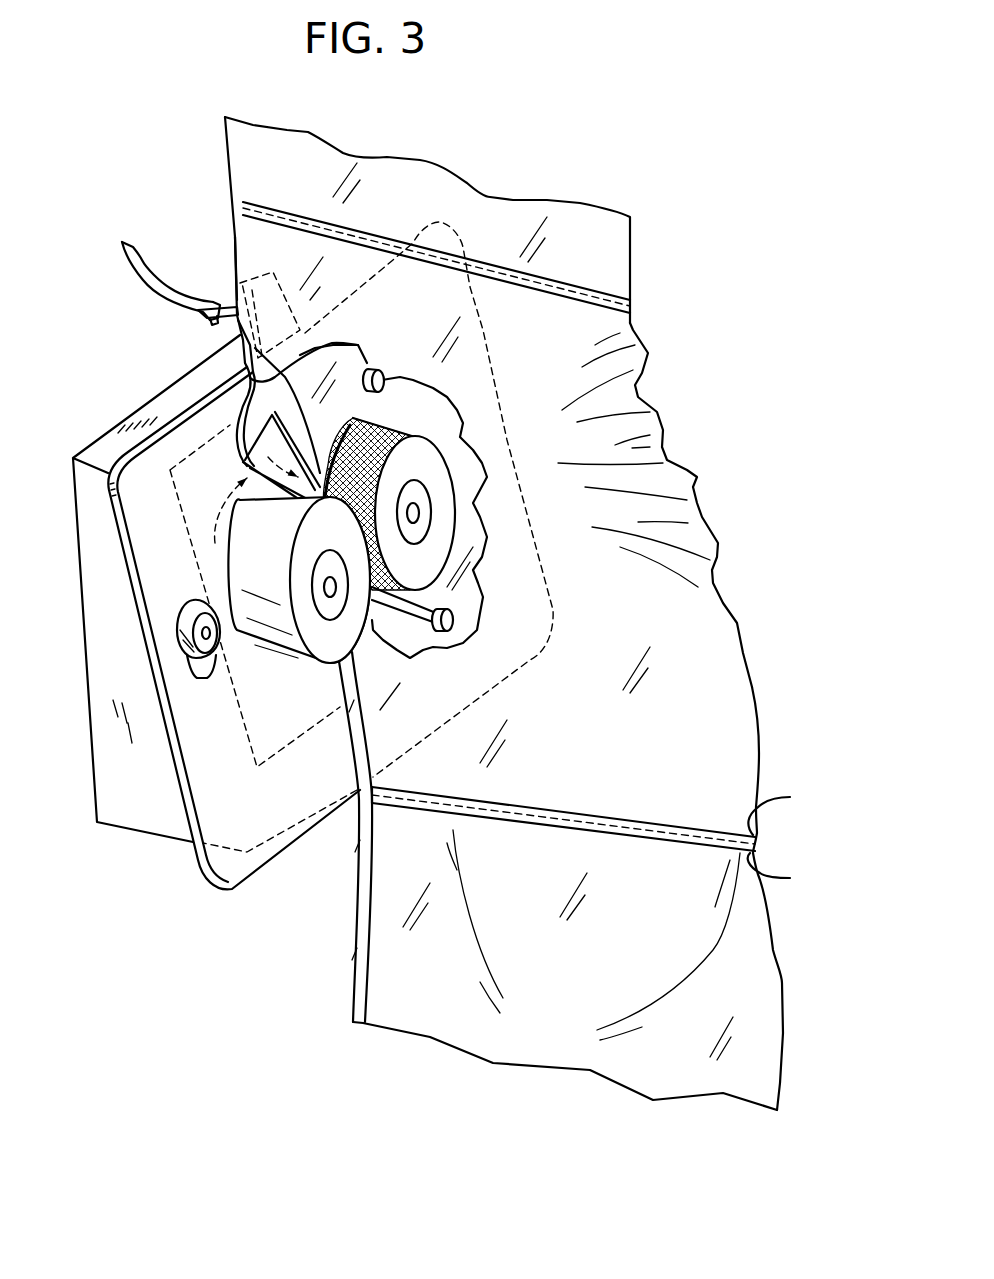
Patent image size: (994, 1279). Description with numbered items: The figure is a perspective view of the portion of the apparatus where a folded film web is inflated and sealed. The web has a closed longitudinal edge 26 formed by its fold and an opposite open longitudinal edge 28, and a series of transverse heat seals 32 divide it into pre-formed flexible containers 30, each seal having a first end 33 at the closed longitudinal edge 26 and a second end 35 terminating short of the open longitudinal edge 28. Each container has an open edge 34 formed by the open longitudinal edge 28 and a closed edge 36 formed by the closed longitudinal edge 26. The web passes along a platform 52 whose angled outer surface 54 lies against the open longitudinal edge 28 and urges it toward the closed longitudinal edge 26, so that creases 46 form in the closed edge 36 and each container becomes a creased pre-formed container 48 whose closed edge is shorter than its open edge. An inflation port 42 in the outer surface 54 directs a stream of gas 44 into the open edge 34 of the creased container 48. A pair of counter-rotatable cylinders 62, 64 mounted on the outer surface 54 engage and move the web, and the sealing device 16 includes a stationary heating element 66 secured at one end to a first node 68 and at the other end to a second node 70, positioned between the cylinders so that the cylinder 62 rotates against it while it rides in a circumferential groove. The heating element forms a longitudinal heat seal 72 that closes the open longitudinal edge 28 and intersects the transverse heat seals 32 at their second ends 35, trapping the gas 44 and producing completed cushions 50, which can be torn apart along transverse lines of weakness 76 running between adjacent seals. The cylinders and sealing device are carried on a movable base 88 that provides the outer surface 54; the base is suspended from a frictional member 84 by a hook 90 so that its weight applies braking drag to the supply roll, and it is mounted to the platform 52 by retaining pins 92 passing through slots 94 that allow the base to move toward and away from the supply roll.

The sealing device 16 is at (373, 365).
The closed longitudinal edge 26 is at (757, 690).
The open longitudinal edge 28 is at (235, 237).
The pre-formed flexible container 30 is at (374, 196).
The transverse heat seal 32 is at (540, 280).
The first end 33 is at (785, 838).
The open edge 34 is at (247, 392).
The second end 35 is at (373, 787).
The closed edge 36 is at (632, 260).
The inflation port 42 is at (268, 440).
The stream of gas 44 is at (215, 527).
The crease 46 is at (693, 480).
The creased pre-formed container 48 is at (614, 755).
The completed cushion 50 is at (535, 985).
The platform 52 is at (148, 808).
The outer surface 54 is at (274, 793).
The cylinder 62 is at (407, 475).
The cylinder 64 is at (317, 553).
The heating element 66 is at (358, 400).
The first node 68 is at (382, 378).
The second node 70 is at (452, 623).
The longitudinal heat seal 72 is at (373, 680).
The transverse line of weakness 76 is at (485, 273).
The frictional member 84 is at (140, 270).
The movable base 88 is at (223, 873).
The hook 90 is at (230, 302).
The retaining pin 92 is at (207, 647).
The slot 94 is at (205, 680).